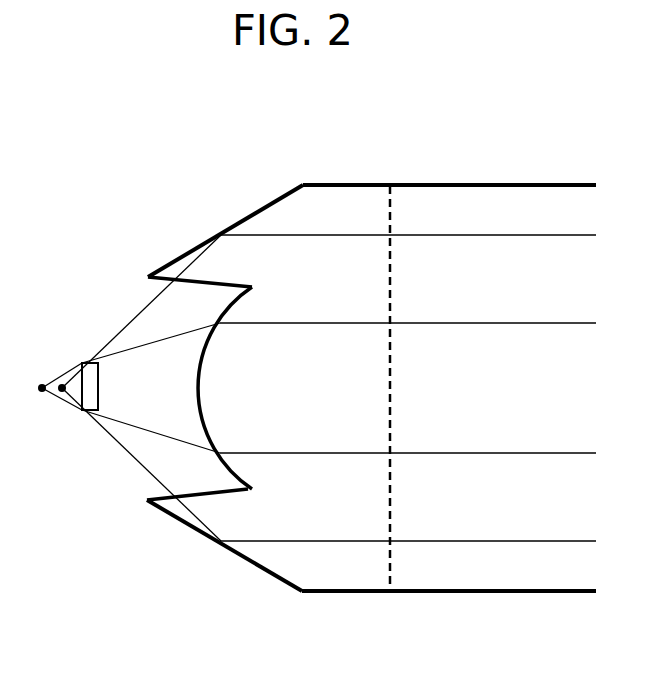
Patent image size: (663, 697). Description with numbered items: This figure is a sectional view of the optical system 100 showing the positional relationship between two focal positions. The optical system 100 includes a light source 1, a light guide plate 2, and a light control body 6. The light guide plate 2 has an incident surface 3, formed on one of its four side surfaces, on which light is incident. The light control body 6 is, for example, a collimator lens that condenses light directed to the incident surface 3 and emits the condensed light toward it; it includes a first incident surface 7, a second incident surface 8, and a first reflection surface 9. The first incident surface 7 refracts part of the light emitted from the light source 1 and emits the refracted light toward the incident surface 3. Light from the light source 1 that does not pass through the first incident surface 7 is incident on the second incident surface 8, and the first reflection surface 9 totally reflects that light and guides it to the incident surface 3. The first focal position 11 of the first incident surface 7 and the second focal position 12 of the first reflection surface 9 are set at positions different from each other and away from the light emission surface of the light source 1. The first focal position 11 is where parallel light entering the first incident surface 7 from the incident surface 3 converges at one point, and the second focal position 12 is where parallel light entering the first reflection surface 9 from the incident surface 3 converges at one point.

The optical system 100 is at (461, 162).
The first reflection surface 9 is at (235, 222).
The second incident surface 8 is at (148, 278).
The first incident surface 7 is at (198, 385).
The light control body 6 is at (185, 558).
The incident surface 3 is at (390, 557).
The light guide plate 2 is at (477, 593).
The light source 1 is at (88, 363).
The first focal position 11 is at (42, 386).
The second focal position 12 is at (62, 391).